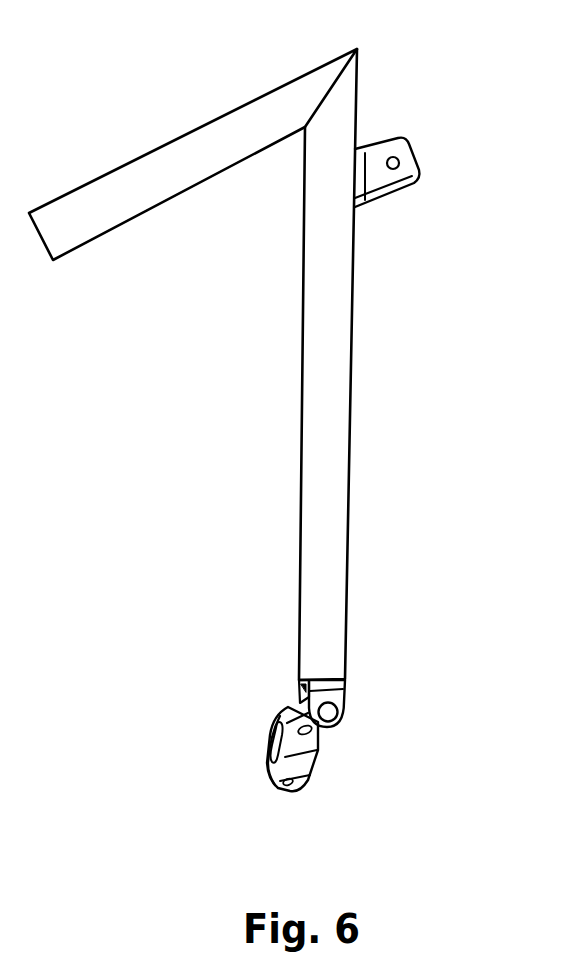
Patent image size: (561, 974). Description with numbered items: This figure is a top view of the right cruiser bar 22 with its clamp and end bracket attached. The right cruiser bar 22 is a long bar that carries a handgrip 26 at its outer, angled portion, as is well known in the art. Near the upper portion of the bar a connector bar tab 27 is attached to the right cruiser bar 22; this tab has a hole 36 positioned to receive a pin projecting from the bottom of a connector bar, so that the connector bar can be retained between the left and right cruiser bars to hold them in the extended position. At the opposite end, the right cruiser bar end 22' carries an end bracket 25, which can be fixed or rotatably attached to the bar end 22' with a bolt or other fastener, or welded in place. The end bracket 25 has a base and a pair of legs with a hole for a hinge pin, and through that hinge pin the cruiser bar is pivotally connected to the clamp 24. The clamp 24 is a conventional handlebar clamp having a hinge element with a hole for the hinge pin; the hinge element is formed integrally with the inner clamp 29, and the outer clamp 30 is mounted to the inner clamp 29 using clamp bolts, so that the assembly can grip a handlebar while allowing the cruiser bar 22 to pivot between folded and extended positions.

The right cruiser bar 22 is at (285, 364).
The right cruiser bar end 22' is at (266, 656).
The clamp 24 is at (313, 757).
The end bracket 25 is at (343, 690).
The handgrip 26 is at (140, 180).
The connector bar tab 27 is at (378, 148).
The inner clamp 29 is at (285, 718).
The outer clamp 30 is at (270, 765).
The hole 36 is at (400, 160).